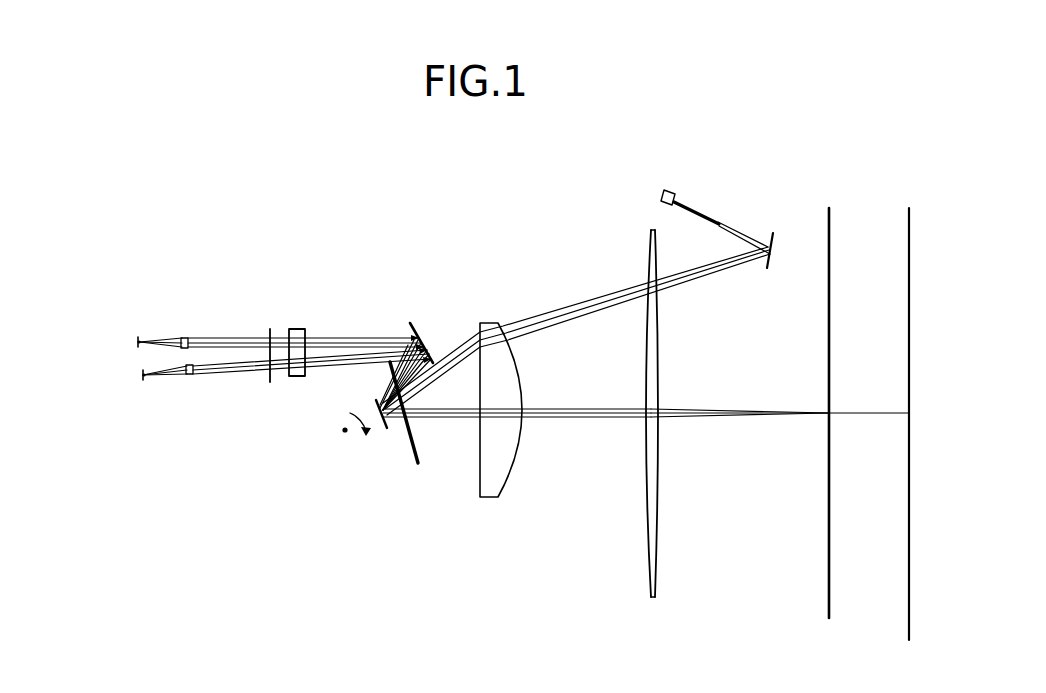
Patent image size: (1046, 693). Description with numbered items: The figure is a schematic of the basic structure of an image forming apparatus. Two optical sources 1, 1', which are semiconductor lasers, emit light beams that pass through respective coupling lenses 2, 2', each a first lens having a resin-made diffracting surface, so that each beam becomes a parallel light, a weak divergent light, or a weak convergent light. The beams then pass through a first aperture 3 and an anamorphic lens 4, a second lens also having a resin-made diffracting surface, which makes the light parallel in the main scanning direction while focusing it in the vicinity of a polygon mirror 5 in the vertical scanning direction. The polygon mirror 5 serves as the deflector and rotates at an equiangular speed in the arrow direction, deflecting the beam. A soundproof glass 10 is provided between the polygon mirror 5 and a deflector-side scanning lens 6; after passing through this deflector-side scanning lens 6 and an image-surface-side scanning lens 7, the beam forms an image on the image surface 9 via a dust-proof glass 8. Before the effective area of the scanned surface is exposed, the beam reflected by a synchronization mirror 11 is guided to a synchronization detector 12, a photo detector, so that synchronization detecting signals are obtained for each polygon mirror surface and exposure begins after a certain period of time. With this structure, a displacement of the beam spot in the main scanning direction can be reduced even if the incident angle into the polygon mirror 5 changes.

The optical source 1 is at (105, 328).
The coupling lens 2 is at (146, 357).
The optical source 1' is at (117, 396).
The coupling lens 2' is at (163, 401).
The first aperture 3 is at (270, 379).
The anamorphic lens 4 is at (293, 377).
The polygon mirror 5 is at (380, 408).
The soundproof glass 10 is at (415, 455).
The deflector-side scanning lens 6 is at (478, 488).
The image-surface-side scanning lens 7 is at (645, 555).
The dust-proof glass 8 is at (827, 563).
The image surface 9 is at (907, 557).
The synchronization mirror 11 is at (777, 235).
The synchronization detector 12 is at (677, 195).